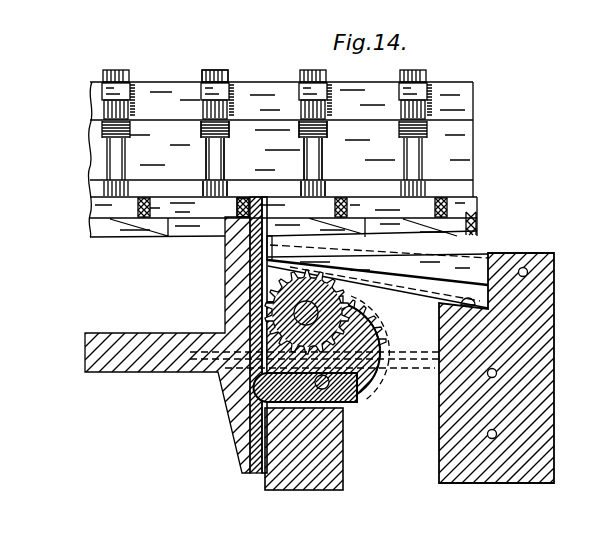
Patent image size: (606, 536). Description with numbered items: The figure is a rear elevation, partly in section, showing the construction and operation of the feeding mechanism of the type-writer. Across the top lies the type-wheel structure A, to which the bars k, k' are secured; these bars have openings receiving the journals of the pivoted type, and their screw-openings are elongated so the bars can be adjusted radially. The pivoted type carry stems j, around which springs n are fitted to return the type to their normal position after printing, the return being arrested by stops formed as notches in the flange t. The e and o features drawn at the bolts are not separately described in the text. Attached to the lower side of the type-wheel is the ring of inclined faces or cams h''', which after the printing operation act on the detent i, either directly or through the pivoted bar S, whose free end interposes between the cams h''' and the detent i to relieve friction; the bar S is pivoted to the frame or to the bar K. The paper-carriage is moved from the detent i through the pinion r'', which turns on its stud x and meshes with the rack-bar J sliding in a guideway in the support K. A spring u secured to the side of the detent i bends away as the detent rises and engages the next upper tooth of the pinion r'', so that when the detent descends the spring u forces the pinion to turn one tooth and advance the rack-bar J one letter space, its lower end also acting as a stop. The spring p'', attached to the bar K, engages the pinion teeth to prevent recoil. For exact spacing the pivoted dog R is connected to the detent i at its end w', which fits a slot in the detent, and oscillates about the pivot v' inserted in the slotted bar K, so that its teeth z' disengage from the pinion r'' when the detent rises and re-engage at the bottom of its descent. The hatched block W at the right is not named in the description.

The beam A is at (280, 153).
The bar k is at (227, 73).
The bolt e is at (200, 110).
The spring n is at (271, 132).
The stem j is at (264, 159).
The plate o is at (264, 189).
The flange t is at (240, 192).
The bar k' is at (294, 214).
The cams h''' is at (283, 236).
The pivoted bar S is at (378, 276).
The spring p'' is at (437, 306).
The spring u is at (247, 262).
The detent i is at (253, 288).
The pivoted dog R is at (324, 353).
The teeth z' is at (361, 348).
The end of the dog w' is at (305, 387).
The pivot v' is at (328, 387).
The pinion r'' is at (307, 312).
The stud x is at (309, 315).
The rack-bar J is at (315, 365).
The support K is at (315, 449).
The wall block W is at (497, 368).